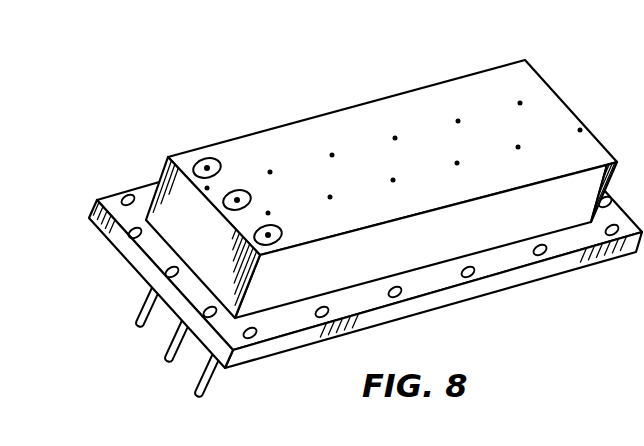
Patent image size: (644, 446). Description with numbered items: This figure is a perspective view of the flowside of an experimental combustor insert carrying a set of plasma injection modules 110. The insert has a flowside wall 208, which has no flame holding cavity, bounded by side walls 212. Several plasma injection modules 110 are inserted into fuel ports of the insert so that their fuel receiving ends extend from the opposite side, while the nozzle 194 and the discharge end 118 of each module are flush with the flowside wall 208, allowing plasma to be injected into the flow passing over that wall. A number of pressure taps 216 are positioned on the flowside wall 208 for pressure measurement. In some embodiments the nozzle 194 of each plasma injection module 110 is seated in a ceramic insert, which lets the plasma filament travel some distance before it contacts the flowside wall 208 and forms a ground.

The discharge end 118 is at (178, 148).
The plasma injection module 110 is at (140, 323).
The nozzle 194 is at (237, 194).
The flowside wall 208 is at (360, 125).
The side walls 212 is at (472, 233).
The pressure taps 216 is at (520, 103).